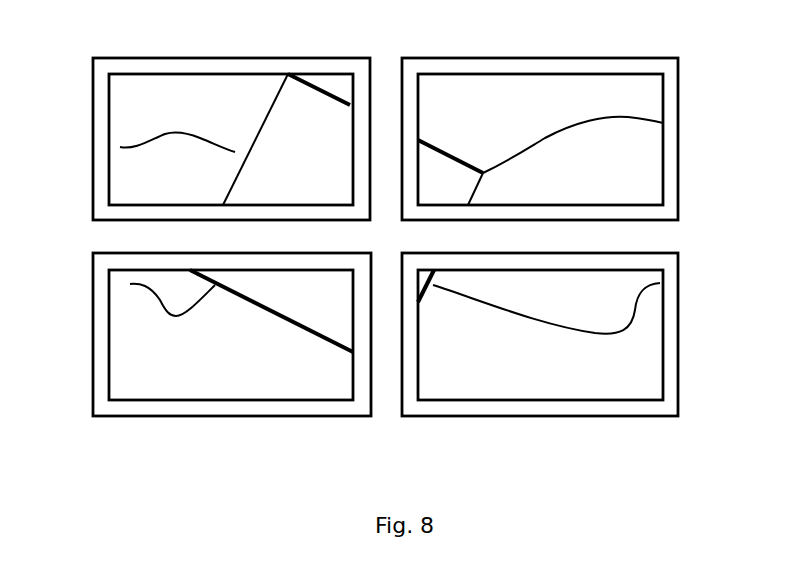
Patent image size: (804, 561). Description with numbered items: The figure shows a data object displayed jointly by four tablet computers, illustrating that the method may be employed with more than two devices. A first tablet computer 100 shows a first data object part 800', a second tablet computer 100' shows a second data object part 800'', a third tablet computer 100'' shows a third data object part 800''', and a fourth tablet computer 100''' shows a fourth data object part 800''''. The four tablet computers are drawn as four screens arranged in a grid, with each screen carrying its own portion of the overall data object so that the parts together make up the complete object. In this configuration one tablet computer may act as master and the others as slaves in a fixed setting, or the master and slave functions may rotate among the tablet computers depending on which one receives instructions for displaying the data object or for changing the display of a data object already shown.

The first tablet computer 100 is at (196, 123).
The second tablet computer 100' is at (203, 357).
The third tablet computer 100'' is at (586, 124).
The fourth tablet computer 100''' is at (584, 357).
The first data object part 800' is at (126, 121).
The second data object part 800'' is at (114, 300).
The third data object part 800''' is at (623, 132).
The fourth data object part 800'''' is at (600, 308).